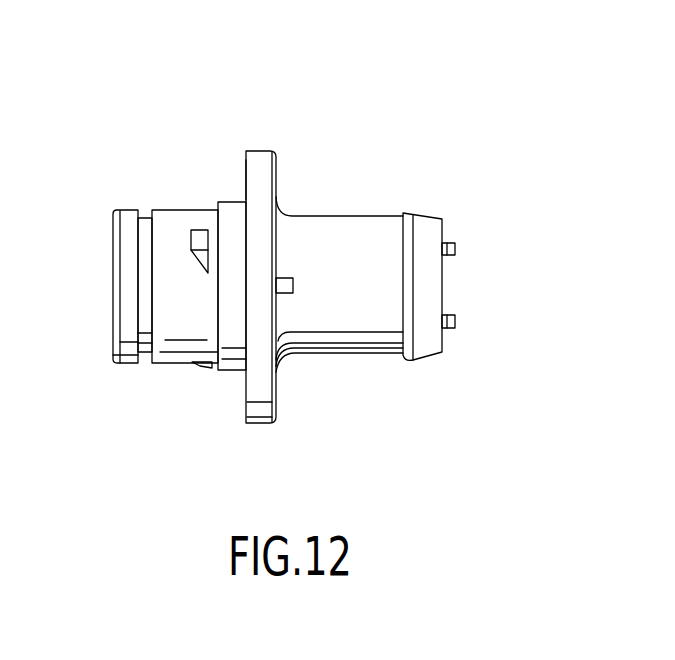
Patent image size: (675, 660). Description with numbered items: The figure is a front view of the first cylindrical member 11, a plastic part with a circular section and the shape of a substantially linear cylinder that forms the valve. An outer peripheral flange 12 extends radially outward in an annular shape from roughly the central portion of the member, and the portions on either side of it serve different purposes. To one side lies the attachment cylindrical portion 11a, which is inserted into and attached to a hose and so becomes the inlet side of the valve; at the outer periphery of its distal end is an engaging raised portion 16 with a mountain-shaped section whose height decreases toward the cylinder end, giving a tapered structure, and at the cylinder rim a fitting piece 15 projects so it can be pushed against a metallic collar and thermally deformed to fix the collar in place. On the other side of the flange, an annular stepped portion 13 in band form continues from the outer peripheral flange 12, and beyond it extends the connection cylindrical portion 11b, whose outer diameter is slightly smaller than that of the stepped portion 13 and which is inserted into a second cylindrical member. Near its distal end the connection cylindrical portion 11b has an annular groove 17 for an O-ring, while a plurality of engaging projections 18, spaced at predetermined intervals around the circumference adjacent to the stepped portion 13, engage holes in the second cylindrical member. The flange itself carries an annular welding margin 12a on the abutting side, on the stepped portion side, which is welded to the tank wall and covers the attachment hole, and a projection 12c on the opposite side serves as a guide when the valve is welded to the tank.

The first cylindrical member 11 is at (349, 182).
The attachment cylindrical portion 11a is at (348, 354).
The connection cylindrical portion 11b is at (172, 365).
The outer peripheral flange 12 is at (260, 150).
The welding margin 12a is at (245, 163).
The projection 12c is at (295, 286).
The stepped portion 13 is at (235, 202).
The fitting piece 15 is at (455, 249).
The engaging raised portion 16 is at (407, 213).
The annular groove 17 is at (145, 353).
The engaging projections 18 is at (192, 233).